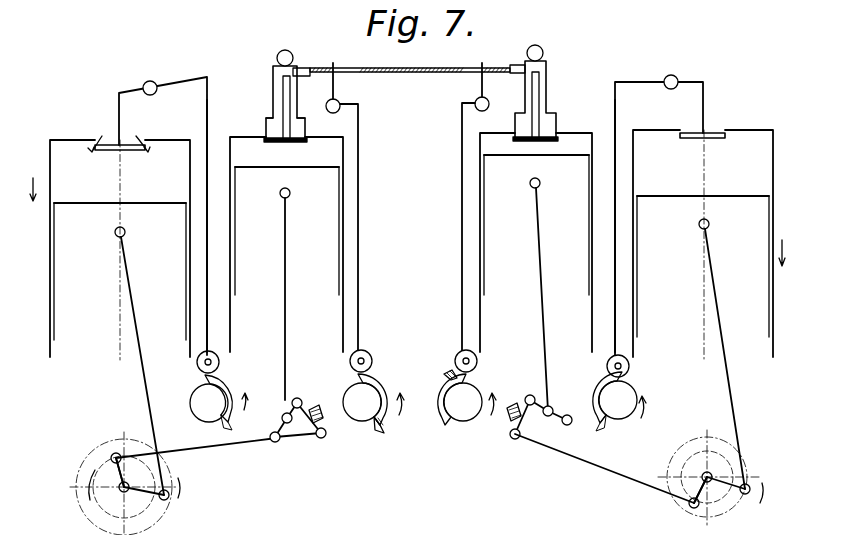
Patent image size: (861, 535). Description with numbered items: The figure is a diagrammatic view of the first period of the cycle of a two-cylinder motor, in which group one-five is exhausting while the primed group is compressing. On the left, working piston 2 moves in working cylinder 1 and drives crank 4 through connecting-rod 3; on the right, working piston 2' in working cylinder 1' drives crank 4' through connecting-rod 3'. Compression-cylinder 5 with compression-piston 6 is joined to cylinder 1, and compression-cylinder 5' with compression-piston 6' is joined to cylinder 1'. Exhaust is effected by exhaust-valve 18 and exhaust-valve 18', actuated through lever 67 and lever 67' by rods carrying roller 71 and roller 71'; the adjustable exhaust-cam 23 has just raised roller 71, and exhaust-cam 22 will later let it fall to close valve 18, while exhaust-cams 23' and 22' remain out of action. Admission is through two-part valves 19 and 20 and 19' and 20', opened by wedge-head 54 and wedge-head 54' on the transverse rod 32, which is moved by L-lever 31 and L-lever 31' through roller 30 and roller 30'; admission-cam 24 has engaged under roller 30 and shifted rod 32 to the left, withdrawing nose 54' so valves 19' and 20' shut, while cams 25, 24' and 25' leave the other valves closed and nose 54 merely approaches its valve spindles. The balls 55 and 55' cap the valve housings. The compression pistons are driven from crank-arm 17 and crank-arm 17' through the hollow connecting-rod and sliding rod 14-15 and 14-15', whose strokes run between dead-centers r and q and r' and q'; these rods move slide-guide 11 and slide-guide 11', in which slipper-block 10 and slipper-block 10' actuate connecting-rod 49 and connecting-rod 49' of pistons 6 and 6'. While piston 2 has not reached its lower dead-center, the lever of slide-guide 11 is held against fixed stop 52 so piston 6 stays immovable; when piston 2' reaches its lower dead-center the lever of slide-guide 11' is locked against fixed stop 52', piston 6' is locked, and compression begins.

The working cylinder 1 is at (110, 248).
The working piston 2 is at (120, 250).
The connecting-rod 3 is at (139, 361).
The crank 4 is at (125, 483).
The crank-arm 17 is at (112, 472).
The upper dead-center r is at (143, 477).
The stroke end position q is at (88, 499).
The hollow connecting-rod and sliding rod 14-15 is at (196, 455).
The exhaust-valve 18 is at (119, 155).
The lever 67 is at (163, 209).
The slipper-block 10 is at (218, 226).
The roller 71 is at (215, 350).
The adjustable exhaust-cam 23 is at (221, 396).
The exhaust-cam 22 is at (242, 411).
The compression-cylinder 5 is at (286, 244).
The compression-piston 6 is at (287, 182).
The connecting-rod 49 is at (299, 299).
The admission-valve part 19 is at (290, 152).
The admission-valve part 20 is at (300, 102).
The ball 55 is at (269, 58).
The wedge-head 54 is at (309, 60).
The rod 32 is at (418, 76).
The L-lever 31 is at (344, 206).
The roller 30 is at (373, 361).
The admission-cam 24 is at (377, 399).
The admission-cam 25 is at (391, 431).
The slide-guide 11 is at (298, 410).
The fixed stop 52 is at (322, 409).
The L-lever 31' is at (473, 206).
The roller 30' is at (453, 361).
The admission-cam 24' is at (465, 409).
The admission-cam 25' is at (438, 378).
The compression-cylinder 5' is at (536, 242).
The compression-piston 6' is at (536, 171).
The connecting-rod 49' is at (556, 299).
The admission-valve part 19' is at (549, 147).
The admission-valve part 20' is at (549, 99).
The ball 55' is at (552, 52).
The wedge-head 54' is at (520, 81).
The fixed stop 52' is at (520, 401).
The slide-guide 11' is at (549, 416).
The hollow connecting-rod and sliding rod 14-15' is at (604, 468).
The working cylinder 1' is at (709, 243).
The exhaust-valve 18' is at (712, 144).
The working piston 2' is at (703, 245).
The connecting-rod 3' is at (722, 354).
The crank 4' is at (710, 477).
The crank-arm 17' is at (693, 490).
The upper dead-center r' is at (687, 467).
The stroke end position q' is at (726, 467).
The lever 67' is at (659, 209).
The slipper-block 10' is at (606, 226).
The roller 71' is at (636, 366).
The adjustable exhaust-cam 23' is at (619, 407).
The exhaust-cam 22' is at (601, 397).